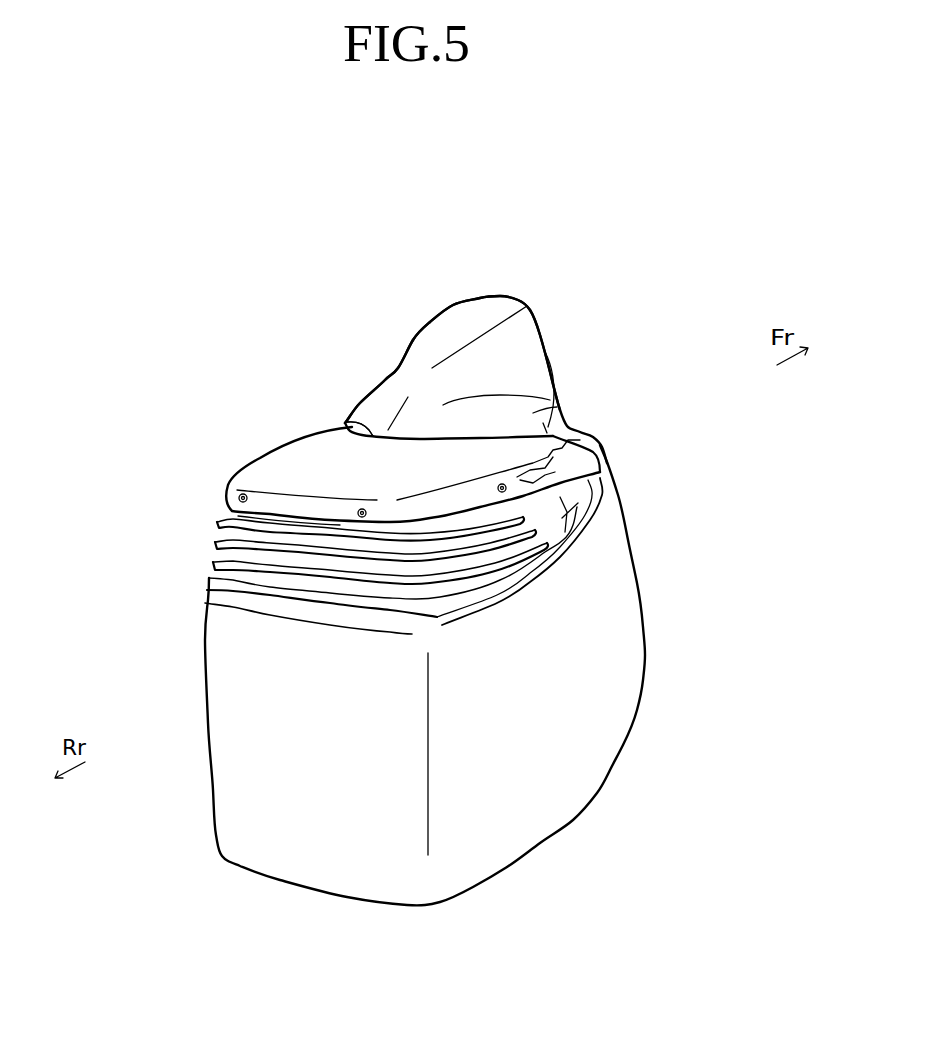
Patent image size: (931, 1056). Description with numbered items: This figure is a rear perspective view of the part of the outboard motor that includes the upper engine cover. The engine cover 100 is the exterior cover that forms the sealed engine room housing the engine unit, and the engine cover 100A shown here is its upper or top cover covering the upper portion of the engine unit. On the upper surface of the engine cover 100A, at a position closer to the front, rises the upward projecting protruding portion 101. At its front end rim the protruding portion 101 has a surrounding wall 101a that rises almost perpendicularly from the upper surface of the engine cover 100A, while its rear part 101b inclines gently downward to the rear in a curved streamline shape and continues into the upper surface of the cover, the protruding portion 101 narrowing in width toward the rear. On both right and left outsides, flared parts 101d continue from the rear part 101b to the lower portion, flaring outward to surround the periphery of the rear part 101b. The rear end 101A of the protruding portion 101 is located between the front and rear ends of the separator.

The engine cover 100 is at (622, 650).
The engine cover (upper cover) 100A is at (272, 470).
The protruding portion 101 is at (502, 368).
The rear end of the protruding portion 101A is at (343, 422).
The surrounding wall 101a is at (548, 337).
The rear part 101b is at (432, 348).
The flared parts 101d is at (360, 400).